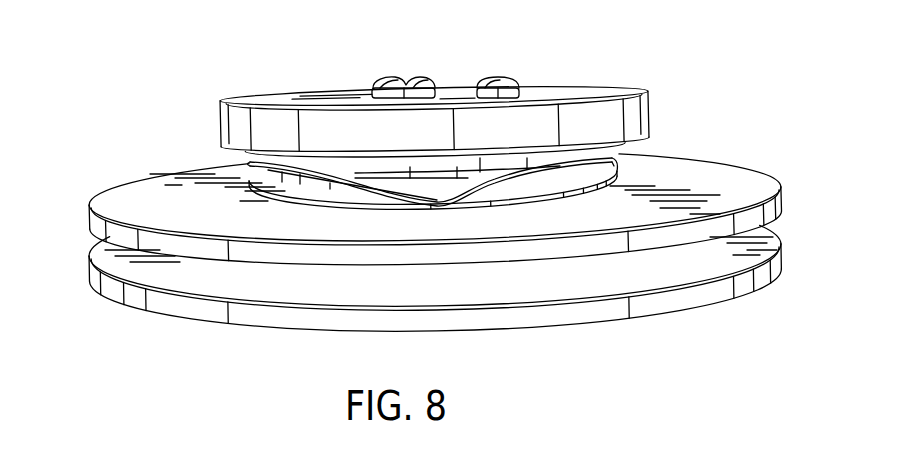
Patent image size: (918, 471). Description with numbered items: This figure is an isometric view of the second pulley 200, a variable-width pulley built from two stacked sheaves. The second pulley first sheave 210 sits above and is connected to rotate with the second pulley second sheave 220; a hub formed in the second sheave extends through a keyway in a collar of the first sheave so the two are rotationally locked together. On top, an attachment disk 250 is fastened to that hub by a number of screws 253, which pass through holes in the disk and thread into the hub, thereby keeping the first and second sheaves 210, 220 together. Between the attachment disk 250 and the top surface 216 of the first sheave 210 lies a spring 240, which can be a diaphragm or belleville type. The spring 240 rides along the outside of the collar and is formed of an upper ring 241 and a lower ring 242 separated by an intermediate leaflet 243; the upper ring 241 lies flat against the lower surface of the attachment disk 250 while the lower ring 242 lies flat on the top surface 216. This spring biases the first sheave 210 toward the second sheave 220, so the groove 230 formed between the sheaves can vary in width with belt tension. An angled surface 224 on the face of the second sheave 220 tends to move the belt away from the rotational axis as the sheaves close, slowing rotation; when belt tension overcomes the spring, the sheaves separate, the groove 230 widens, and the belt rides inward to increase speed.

The second pulley 200 is at (206, 72).
The second pulley first sheave 210 is at (725, 176).
The top surface 216 is at (150, 194).
The second pulley second sheave 220 is at (753, 282).
The angled surface 224 is at (260, 278).
The groove 230 is at (161, 252).
The spring 240 is at (497, 180).
The upper ring 241 is at (530, 158).
The lower ring 242 is at (600, 187).
The intermediate leaflet 243 is at (333, 183).
The attachment disk 250 is at (294, 99).
The screws 253 is at (497, 76).